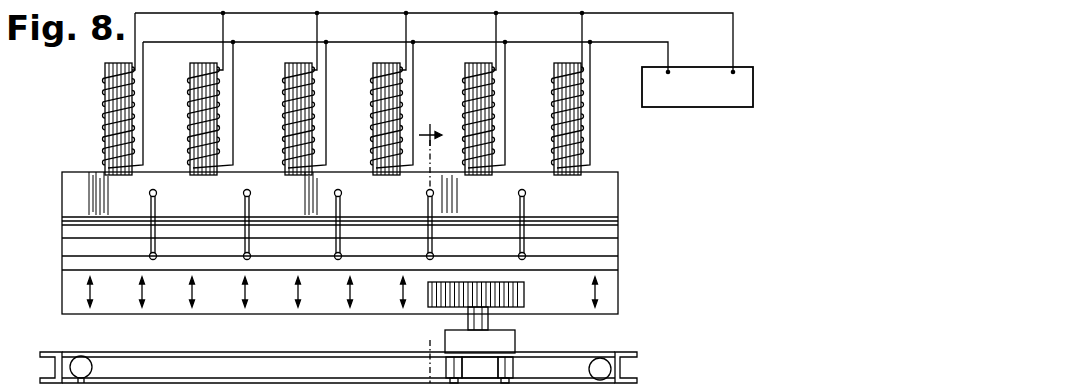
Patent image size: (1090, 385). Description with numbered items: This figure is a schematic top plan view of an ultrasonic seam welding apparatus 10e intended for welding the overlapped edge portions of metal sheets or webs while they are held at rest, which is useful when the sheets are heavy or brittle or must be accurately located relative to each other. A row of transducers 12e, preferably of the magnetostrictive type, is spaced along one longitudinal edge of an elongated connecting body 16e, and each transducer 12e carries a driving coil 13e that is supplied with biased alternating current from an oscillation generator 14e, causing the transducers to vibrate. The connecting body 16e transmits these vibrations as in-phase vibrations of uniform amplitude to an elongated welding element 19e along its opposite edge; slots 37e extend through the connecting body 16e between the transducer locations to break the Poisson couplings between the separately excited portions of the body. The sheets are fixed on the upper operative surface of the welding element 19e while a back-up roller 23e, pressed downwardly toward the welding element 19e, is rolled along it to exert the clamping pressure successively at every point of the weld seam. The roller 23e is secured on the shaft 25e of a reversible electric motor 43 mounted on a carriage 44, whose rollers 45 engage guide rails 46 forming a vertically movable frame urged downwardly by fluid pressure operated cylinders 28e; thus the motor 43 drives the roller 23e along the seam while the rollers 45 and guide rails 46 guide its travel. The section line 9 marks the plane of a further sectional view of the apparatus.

The ultrasonic seam welding apparatus 10e is at (86, 131).
The transducer 12e is at (109, 64).
The driving coil 13e is at (106, 101).
The oscillation generator 14e is at (693, 108).
The connecting body 16e is at (77, 197).
The welding element 19e is at (67, 292).
The back-up roller 23e is at (524, 294).
The shaft 25e is at (488, 322).
The fluid pressure operated cylinder 28e is at (90, 366).
The slot 37e is at (242, 202).
The reversible electric motor 43 is at (501, 346).
The carriage 44 is at (546, 384).
The roller 45 is at (471, 347).
The guide rail 46 is at (210, 340).
The section line 9 is at (437, 253).